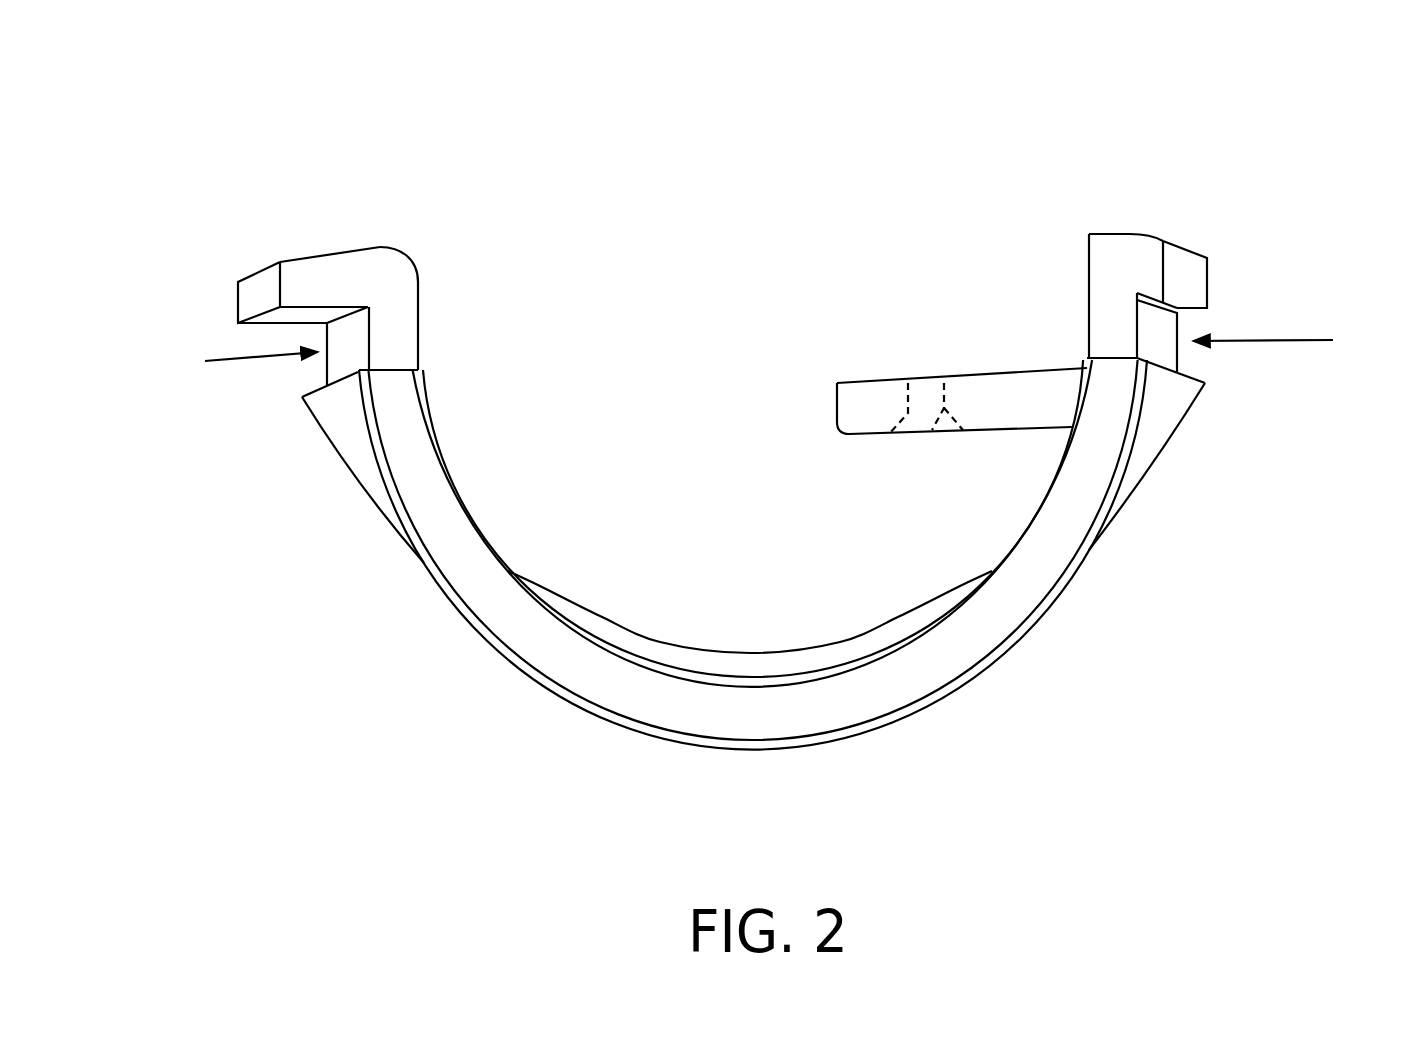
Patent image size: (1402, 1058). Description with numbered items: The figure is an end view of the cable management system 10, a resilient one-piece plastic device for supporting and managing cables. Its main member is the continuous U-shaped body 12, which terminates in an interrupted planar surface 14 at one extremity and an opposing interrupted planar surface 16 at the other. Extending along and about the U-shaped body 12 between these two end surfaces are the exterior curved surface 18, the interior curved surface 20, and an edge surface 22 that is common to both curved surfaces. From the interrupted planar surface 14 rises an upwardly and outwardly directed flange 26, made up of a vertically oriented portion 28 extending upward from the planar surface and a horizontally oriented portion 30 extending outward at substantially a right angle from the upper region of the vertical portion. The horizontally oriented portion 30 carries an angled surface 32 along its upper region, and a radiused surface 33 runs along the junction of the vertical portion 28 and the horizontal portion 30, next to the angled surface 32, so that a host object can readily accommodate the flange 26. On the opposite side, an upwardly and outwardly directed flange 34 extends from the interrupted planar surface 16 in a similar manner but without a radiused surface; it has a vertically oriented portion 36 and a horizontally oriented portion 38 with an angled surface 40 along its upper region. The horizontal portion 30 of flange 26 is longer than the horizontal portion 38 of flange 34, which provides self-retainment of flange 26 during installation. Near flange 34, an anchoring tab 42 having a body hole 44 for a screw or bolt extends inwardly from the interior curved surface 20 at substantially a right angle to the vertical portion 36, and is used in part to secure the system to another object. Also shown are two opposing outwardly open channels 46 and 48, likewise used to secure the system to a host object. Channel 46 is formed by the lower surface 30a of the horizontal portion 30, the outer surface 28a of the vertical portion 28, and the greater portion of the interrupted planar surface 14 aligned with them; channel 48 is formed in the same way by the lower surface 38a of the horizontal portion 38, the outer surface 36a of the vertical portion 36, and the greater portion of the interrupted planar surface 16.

The cable management system 10 is at (759, 205).
The U-shaped body 12 is at (999, 672).
The interrupted planar surface 14 is at (312, 397).
The interrupted planar surface 16 is at (1195, 380).
The exterior curved surface 18 is at (1150, 440).
The interior curved surface 20 is at (762, 663).
The edge surface 22 is at (810, 712).
The flange 26 is at (371, 238).
The vertically oriented portion 28 is at (405, 338).
The outer surface 28a is at (352, 345).
The horizontally oriented portion 30 is at (318, 278).
The lower surface 30a is at (288, 318).
The angled surface 32 is at (337, 248).
The radiused surface 33 is at (400, 248).
The flange 34 is at (1112, 230).
The vertically oriented portion 36 is at (1105, 333).
The outer surface 36a is at (1153, 333).
The horizontally oriented portion 38 is at (1145, 272).
The lower surface 38a is at (1180, 302).
The angled surface 40 is at (1148, 233).
The anchoring tab 42 is at (865, 380).
The body hole 44 is at (938, 435).
The channel 46 is at (239, 367).
The channel 48 is at (1281, 343).